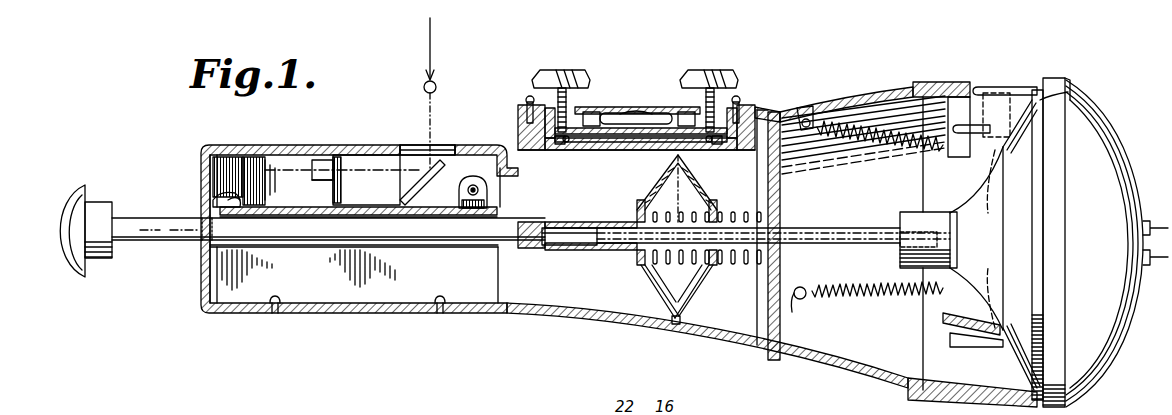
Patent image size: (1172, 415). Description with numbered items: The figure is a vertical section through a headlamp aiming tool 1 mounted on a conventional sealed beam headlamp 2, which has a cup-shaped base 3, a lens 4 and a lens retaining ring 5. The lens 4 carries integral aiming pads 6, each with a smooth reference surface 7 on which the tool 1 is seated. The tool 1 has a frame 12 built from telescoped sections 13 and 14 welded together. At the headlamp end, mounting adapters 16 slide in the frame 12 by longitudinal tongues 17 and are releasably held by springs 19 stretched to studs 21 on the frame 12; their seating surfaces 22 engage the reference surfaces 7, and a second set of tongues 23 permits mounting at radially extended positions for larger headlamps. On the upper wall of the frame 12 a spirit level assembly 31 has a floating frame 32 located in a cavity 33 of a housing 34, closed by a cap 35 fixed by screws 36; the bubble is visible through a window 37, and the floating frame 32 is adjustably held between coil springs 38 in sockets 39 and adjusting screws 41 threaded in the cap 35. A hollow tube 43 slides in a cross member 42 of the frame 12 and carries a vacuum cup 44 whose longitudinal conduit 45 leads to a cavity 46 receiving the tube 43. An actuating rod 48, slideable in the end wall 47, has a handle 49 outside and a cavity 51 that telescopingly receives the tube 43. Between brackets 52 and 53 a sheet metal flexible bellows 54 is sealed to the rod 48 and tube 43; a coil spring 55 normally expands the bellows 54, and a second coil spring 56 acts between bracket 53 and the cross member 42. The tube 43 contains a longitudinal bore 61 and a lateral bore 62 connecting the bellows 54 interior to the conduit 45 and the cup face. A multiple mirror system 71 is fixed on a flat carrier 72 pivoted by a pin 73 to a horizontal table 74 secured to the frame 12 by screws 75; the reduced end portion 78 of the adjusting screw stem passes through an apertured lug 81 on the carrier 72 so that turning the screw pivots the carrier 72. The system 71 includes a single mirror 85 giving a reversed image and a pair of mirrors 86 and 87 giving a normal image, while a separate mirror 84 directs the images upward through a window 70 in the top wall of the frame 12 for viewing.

The headlamp aiming tool 1 is at (402, 313).
The sealed beam headlamp 2 is at (1130, 158).
The cup-shaped base 3 is at (1102, 355).
The lens 4 is at (1014, 356).
The lens retaining ring 5 is at (1058, 238).
The aiming pads 6 is at (1068, 92).
The reference surface 7 is at (1020, 112).
The frame 12 is at (250, 312).
The telescoped section 13 is at (566, 320).
The telescoped section 14 is at (840, 380).
The mounting adapters 16 is at (958, 84).
The longitudinal tongues 17 is at (988, 87).
The springs 19 is at (836, 124).
The studs 21 is at (805, 108).
The seating surfaces 22 is at (1008, 93).
The second set of tongues 23 is at (972, 134).
The spirit level assembly 31 is at (625, 112).
The floating frame 32 is at (642, 134).
The cavity 33 is at (594, 142).
The housing 34 is at (518, 128).
The cap 35 is at (762, 107).
The screws 36 is at (527, 101).
The window 37 is at (648, 108).
The coil springs 38 is at (557, 144).
The sockets 39 is at (566, 143).
The adjusting screws 41 is at (574, 72).
The cross member 42 is at (780, 188).
The hollow tube 43 is at (840, 233).
The vacuum cup 44 is at (965, 190).
The longitudinal conduit 45 is at (957, 245).
The cavity 46 is at (900, 252).
The end wall 47 is at (201, 165).
The actuating rod 48 is at (183, 240).
The handle 49 is at (108, 203).
The cavity 51 is at (569, 246).
The bracket 52 is at (641, 266).
The bracket 53 is at (710, 266).
The flexible bellows 54 is at (658, 185).
The coil spring 55 is at (690, 277).
The second coil spring 56 is at (736, 216).
The longitudinal bore 61 is at (802, 236).
The lateral bore 62 is at (681, 222).
The window 70 is at (414, 146).
The multiple mirror system 71 is at (238, 165).
The flat carrier 72 is at (385, 204).
The pin 73 is at (216, 197).
The table 74 is at (497, 210).
The screws 75 is at (276, 297).
The end portion 78 is at (478, 190).
The apertured lug 81 is at (472, 178).
The mirror 84 is at (424, 184).
The mirror 85 is at (270, 160).
The mirror 86 is at (362, 157).
The mirror 87 is at (318, 162).